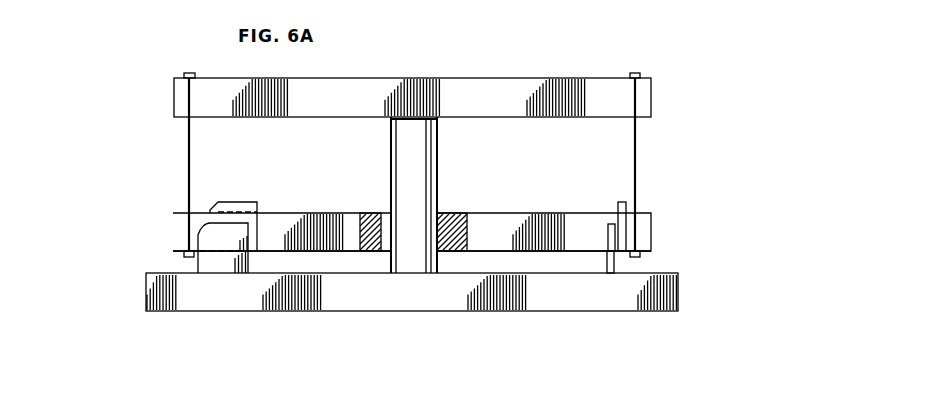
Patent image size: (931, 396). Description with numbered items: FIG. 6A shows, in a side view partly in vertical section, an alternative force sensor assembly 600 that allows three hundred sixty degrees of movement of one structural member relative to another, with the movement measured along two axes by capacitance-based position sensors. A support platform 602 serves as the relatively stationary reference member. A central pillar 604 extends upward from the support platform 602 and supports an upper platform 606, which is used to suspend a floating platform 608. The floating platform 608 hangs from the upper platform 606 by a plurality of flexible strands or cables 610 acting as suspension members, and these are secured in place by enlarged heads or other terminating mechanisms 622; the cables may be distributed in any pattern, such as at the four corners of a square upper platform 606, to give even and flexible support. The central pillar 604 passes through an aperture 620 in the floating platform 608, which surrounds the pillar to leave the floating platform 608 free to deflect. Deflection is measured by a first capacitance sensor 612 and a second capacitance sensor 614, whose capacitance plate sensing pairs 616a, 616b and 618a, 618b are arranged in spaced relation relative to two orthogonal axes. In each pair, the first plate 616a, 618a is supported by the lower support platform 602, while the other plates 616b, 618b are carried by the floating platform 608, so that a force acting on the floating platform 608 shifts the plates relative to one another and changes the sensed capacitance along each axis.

The force sensor assembly 600 is at (648, 148).
The support platform 602 is at (680, 292).
The central pillar 604 is at (400, 160).
The upper platform 606 is at (545, 78).
The floating platform 608 is at (173, 230).
The flexible strands or cables 610 is at (187, 140).
The first capacitance sensor 612 is at (170, 257).
The second capacitance sensor 614 is at (606, 261).
The capacitance plate 616a is at (225, 270).
The capacitance plate 616b is at (232, 208).
The capacitance plate 618a is at (608, 234).
The capacitance plate 618b is at (652, 232).
The aperture 620 is at (444, 234).
The enlarged heads 622 is at (642, 73).